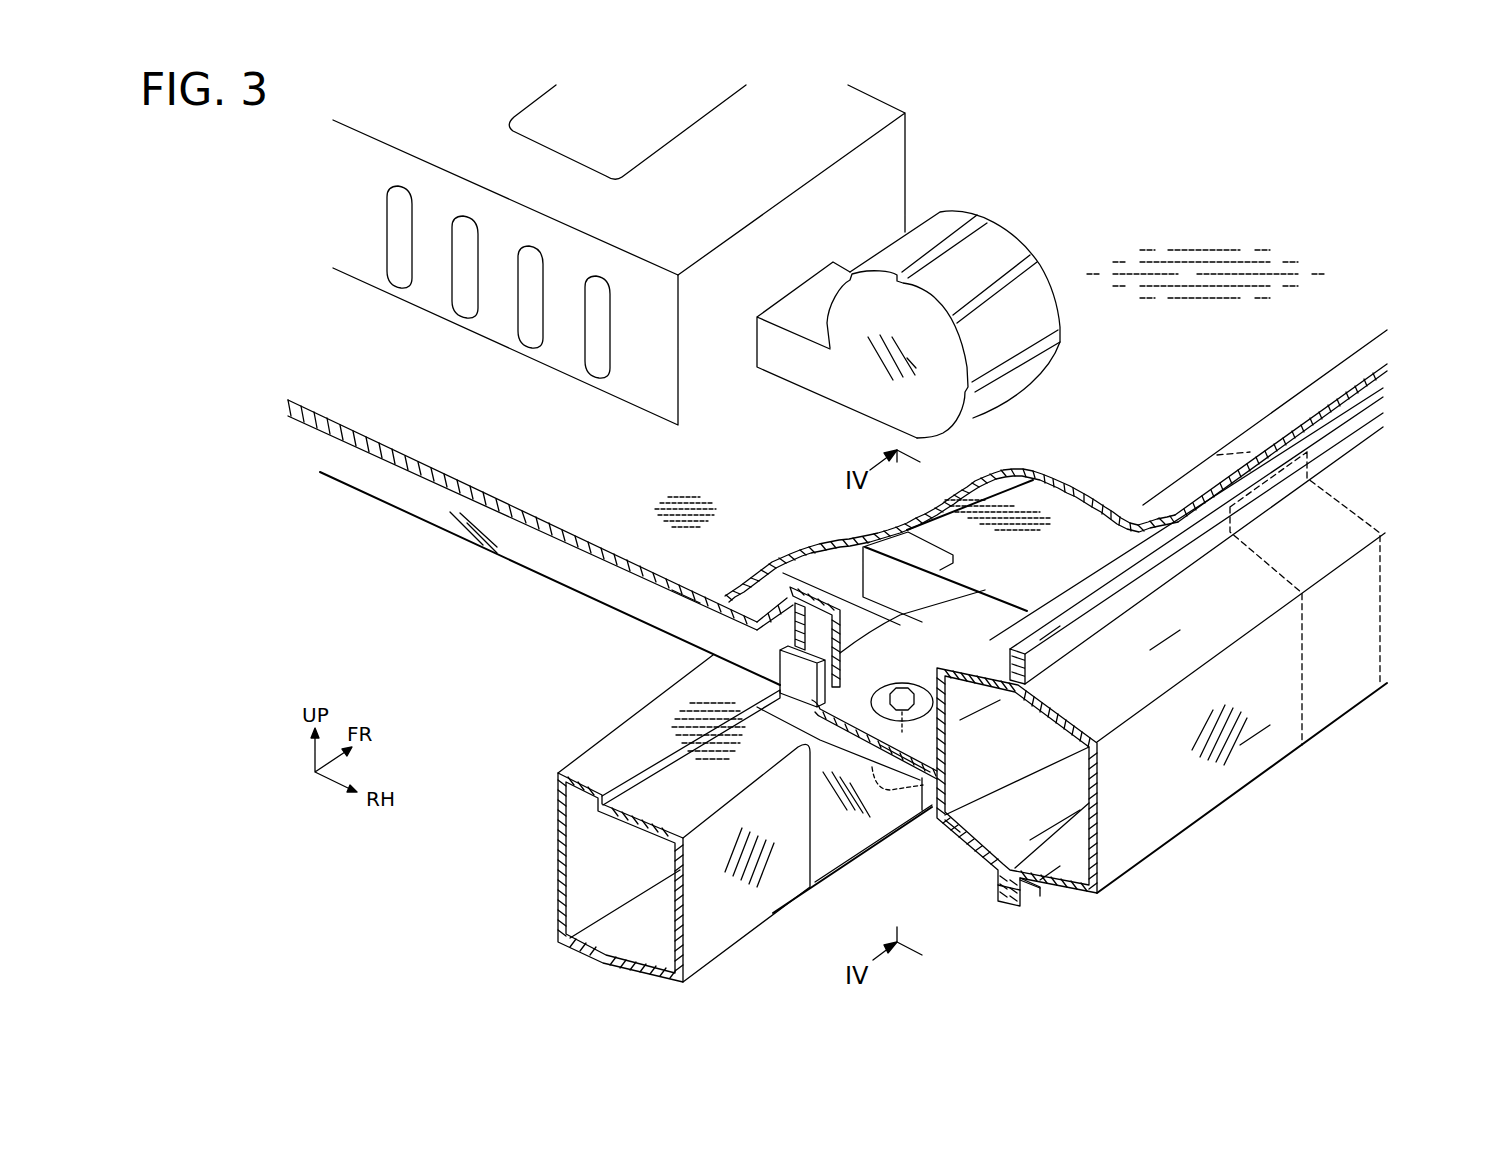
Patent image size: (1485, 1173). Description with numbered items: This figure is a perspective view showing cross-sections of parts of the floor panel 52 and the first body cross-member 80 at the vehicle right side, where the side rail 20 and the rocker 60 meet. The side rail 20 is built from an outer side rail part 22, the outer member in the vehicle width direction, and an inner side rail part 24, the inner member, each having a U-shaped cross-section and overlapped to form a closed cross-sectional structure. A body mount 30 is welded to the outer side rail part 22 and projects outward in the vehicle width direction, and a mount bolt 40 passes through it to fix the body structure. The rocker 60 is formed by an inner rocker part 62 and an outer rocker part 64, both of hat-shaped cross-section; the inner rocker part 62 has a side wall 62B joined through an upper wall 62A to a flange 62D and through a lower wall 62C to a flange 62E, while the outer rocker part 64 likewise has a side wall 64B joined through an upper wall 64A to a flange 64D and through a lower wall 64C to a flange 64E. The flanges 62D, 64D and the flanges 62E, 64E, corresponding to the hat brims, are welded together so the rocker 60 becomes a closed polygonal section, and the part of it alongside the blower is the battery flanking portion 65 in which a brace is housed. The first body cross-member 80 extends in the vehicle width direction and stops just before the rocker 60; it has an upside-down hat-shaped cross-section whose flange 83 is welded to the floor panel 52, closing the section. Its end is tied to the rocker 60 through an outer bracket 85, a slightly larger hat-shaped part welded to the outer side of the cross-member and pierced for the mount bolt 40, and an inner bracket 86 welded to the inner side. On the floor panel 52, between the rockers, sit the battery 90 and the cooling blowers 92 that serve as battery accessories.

The side rail 20 is at (616, 812).
The outer side rail part 22 is at (673, 803).
The inner side rail part 24 is at (657, 727).
The body mount 30 is at (830, 833).
The mount bolt 40 is at (903, 690).
The floor panel 52 is at (1200, 230).
The rocker 60 is at (1125, 675).
The inner rocker part 62 is at (1086, 739).
The upper wall 62A is at (986, 688).
The side wall 62B is at (1015, 750).
The lower wall 62C is at (947, 830).
The flange 62D is at (973, 640).
The flange 62E is at (990, 885).
The outer rocker part 64 is at (1194, 675).
The upper wall 64A is at (1173, 655).
The side wall 64B is at (1252, 740).
The lower wall 64C is at (1047, 867).
The flange 64D is at (1047, 656).
The flange 64E is at (1027, 905).
The battery flanking portion 65 is at (1378, 640).
The first body cross-member 80 is at (562, 568).
The flange 83 is at (675, 595).
The outer bracket 85 is at (920, 732).
The inner bracket 86 is at (1050, 557).
The battery 90 is at (908, 176).
The cooling blowers 92 is at (993, 248).